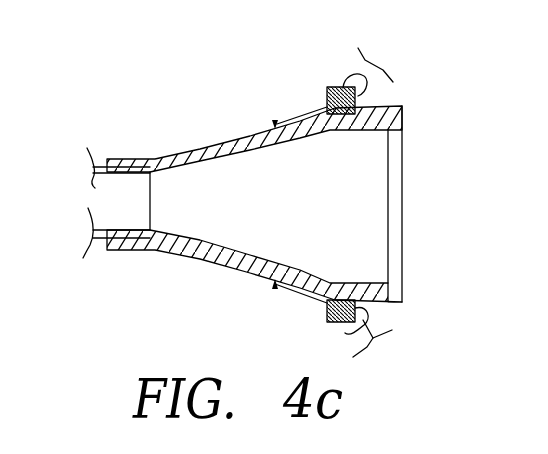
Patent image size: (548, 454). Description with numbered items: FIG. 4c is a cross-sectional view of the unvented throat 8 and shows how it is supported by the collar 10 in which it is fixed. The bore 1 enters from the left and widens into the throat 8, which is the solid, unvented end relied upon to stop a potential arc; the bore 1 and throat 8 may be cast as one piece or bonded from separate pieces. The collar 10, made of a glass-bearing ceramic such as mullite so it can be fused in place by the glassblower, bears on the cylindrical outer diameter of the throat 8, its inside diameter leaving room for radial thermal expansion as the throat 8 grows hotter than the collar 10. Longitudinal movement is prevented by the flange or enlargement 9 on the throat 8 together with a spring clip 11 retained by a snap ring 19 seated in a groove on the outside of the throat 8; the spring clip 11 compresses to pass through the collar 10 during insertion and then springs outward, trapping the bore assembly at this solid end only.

The bore 1 is at (92, 247).
The unvented throat 8 is at (212, 263).
The flange or enlargement 9 is at (394, 105).
The collar 10 is at (327, 87).
The spring clip 11 is at (327, 300).
The snap ring 19 is at (275, 124).